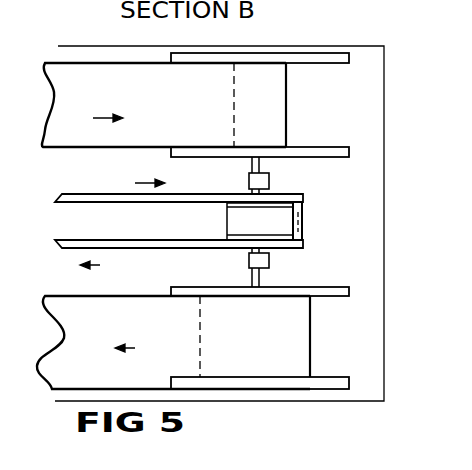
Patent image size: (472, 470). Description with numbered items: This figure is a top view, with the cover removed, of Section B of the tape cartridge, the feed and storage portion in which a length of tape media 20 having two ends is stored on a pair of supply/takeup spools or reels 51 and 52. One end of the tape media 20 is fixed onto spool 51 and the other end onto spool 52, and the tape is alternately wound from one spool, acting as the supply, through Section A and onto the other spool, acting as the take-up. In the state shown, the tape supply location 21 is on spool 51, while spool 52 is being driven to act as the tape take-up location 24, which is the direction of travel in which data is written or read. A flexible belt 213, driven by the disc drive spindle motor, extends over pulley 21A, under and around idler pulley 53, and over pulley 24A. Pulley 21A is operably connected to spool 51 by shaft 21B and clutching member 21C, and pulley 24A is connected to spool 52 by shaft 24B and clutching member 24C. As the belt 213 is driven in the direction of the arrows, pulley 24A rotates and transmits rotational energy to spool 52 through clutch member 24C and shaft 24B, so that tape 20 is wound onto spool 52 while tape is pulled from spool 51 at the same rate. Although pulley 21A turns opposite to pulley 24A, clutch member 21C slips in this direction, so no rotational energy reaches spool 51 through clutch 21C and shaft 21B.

The tape media 20 is at (103, 102).
The tape supply location 21 is at (276, 357).
The tape take-up location 24 is at (276, 111).
The supply/takeup spool 51 is at (324, 389).
The supply/takeup spool 52 is at (329, 53).
The idler pulley 53 is at (304, 215).
The flexible belt 213 is at (68, 203).
The pulley 21A is at (240, 240).
The shaft 21B is at (252, 282).
The clutching member 21C is at (270, 258).
The pulley 24A is at (238, 205).
The shaft 24B is at (260, 164).
The clutching member 24C is at (270, 181).